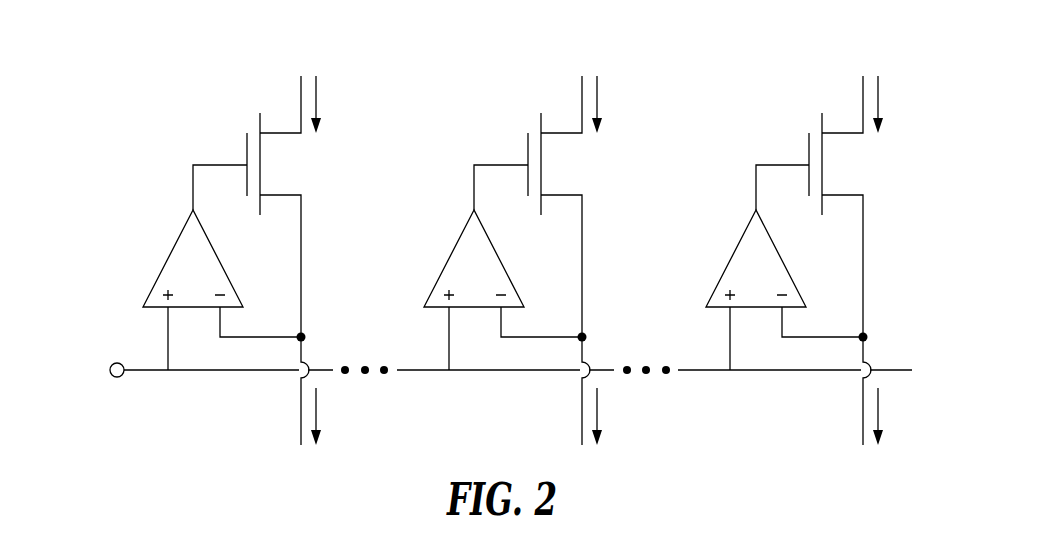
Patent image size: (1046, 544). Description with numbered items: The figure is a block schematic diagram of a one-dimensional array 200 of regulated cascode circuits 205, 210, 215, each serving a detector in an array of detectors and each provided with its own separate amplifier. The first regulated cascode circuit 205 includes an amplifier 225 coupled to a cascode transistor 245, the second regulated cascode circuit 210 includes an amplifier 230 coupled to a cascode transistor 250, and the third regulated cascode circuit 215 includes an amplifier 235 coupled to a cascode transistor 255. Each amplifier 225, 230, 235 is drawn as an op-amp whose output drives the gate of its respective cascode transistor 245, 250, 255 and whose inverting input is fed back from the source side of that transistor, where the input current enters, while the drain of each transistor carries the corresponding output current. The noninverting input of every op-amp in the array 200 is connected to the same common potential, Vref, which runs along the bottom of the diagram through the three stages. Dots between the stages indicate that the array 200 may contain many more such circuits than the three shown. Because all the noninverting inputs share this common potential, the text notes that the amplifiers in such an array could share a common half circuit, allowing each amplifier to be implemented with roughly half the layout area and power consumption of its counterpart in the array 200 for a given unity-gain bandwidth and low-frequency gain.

The one-dimensional array 200 is at (838, 53).
The regulated cascode circuit 205 is at (178, 152).
The regulated cascode circuit 210 is at (459, 152).
The regulated cascode circuit 215 is at (740, 152).
The amplifier 225 is at (168, 260).
The amplifier 230 is at (449, 260).
The amplifier 235 is at (731, 260).
The cascode transistor 245 is at (246, 151).
The cascode transistor 250 is at (527, 151).
The cascode transistor 255 is at (808, 151).